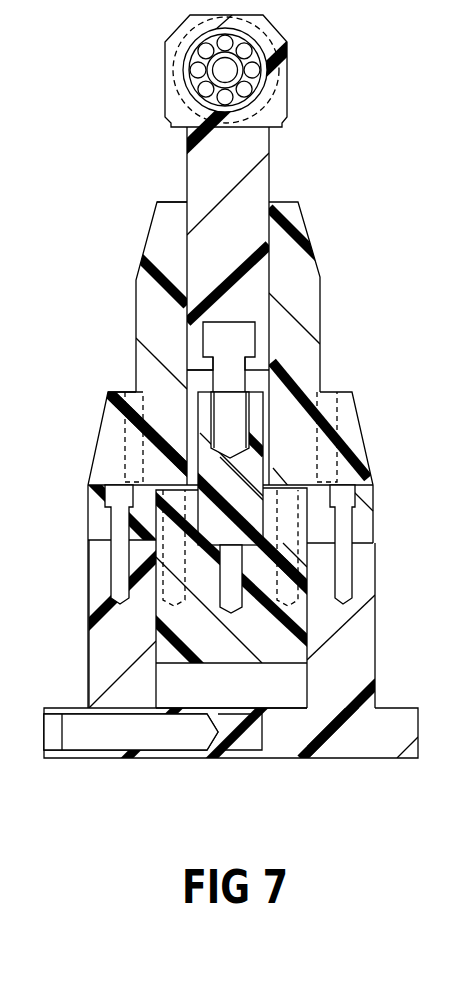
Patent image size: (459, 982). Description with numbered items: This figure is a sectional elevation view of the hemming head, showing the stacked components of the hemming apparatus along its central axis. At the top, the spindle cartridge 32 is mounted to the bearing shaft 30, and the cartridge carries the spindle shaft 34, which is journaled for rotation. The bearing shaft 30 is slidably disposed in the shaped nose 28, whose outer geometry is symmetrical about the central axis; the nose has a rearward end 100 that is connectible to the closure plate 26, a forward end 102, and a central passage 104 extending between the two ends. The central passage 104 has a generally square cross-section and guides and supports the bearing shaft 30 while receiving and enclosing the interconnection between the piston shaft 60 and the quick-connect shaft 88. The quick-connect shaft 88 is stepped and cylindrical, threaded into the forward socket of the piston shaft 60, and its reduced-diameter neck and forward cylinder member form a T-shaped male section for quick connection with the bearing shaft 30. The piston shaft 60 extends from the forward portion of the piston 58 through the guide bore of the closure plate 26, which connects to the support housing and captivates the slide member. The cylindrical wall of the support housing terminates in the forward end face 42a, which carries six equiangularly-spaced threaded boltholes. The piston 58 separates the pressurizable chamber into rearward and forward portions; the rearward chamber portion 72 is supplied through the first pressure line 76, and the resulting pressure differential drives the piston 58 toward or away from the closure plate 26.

The closure plate 26 is at (88, 512).
The shaped nose 28 is at (152, 235).
The bearing shaft 30 is at (197, 172).
The spindle cartridge 32 is at (200, 41).
The spindle shaft 34 is at (228, 73).
The forward end face 42a is at (88, 534).
The piston 58 is at (163, 653).
The piston shaft 60 is at (205, 408).
The rearward chamber portion 72 is at (230, 700).
The first pressure line 76 is at (157, 548).
The quick-connect shaft 88 is at (210, 342).
The rearward end 100 is at (95, 488).
The forward end 102 is at (163, 201).
The central passage 104 is at (192, 352).